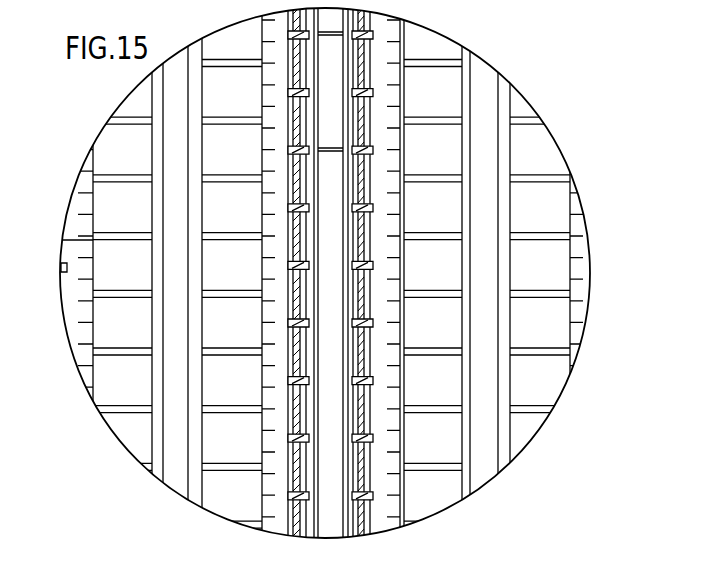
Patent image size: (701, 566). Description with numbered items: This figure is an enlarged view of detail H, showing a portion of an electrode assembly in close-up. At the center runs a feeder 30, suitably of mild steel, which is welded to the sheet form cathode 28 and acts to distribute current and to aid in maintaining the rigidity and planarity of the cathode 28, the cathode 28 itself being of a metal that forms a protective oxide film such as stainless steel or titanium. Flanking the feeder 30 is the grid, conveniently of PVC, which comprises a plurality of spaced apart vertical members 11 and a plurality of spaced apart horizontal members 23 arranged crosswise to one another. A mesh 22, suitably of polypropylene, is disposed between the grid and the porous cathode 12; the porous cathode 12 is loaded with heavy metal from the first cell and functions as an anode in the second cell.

The detail H is at (62, 243).
The vertical members 11 is at (330, 265).
The porous cathode 12 is at (333, 283).
The mesh 22 is at (329, 283).
The horizontal members 23 is at (328, 271).
The sheet form cathode 28 is at (331, 283).
The feeder 30 is at (330, 91).